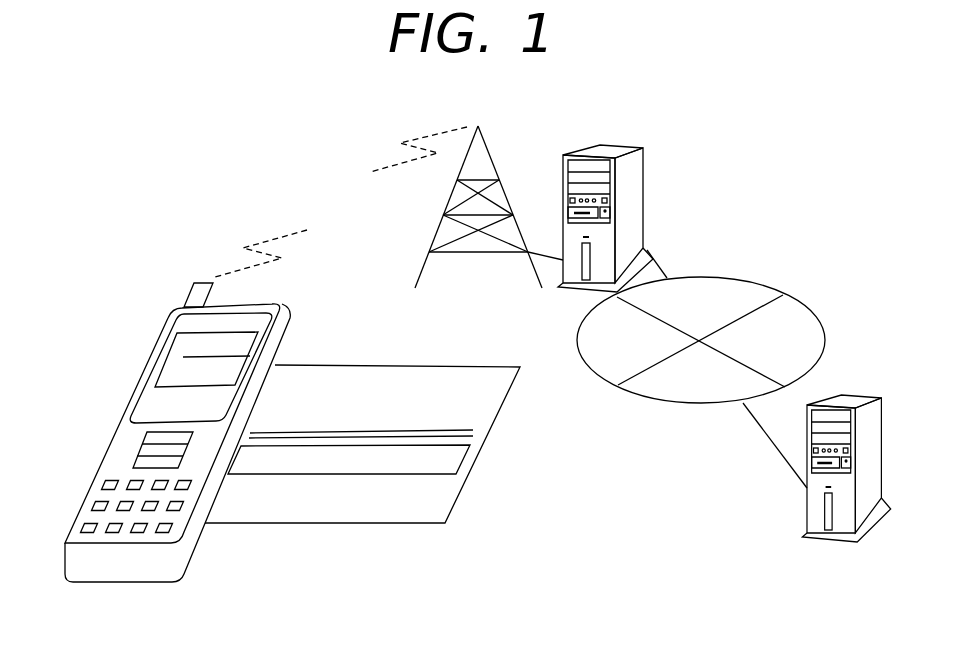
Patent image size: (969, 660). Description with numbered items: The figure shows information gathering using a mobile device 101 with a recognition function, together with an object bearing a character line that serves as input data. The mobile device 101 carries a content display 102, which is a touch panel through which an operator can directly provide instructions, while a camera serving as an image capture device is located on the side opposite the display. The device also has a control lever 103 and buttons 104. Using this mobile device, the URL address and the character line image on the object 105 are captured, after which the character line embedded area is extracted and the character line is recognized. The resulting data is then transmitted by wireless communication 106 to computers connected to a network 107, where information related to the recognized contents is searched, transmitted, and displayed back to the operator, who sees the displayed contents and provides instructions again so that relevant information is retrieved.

The mobile device 101 is at (160, 432).
The content display 102 is at (167, 342).
The control lever 103 is at (145, 434).
The buttons 104 is at (103, 483).
The object with character line 105 is at (467, 365).
The wireless communication 106 is at (489, 153).
The network 107 is at (750, 277).